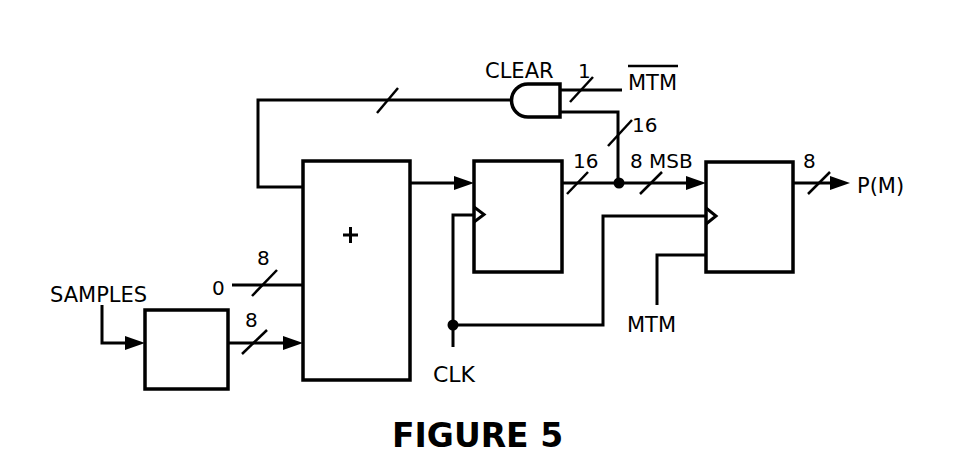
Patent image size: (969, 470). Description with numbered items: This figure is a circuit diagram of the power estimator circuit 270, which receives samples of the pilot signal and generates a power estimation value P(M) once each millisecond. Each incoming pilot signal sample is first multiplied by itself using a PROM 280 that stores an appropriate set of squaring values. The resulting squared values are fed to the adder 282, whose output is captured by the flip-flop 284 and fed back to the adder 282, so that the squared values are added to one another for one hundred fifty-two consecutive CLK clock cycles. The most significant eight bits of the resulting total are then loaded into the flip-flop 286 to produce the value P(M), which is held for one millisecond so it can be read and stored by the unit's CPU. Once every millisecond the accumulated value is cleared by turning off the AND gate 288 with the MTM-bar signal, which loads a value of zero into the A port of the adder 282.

The power estimator circuit 270 is at (190, 124).
The PROM 280 is at (190, 310).
The adder 282 is at (357, 161).
The flip-flop 284 is at (481, 161).
The flip-flop 286 is at (740, 162).
The AND gate 288 is at (536, 101).